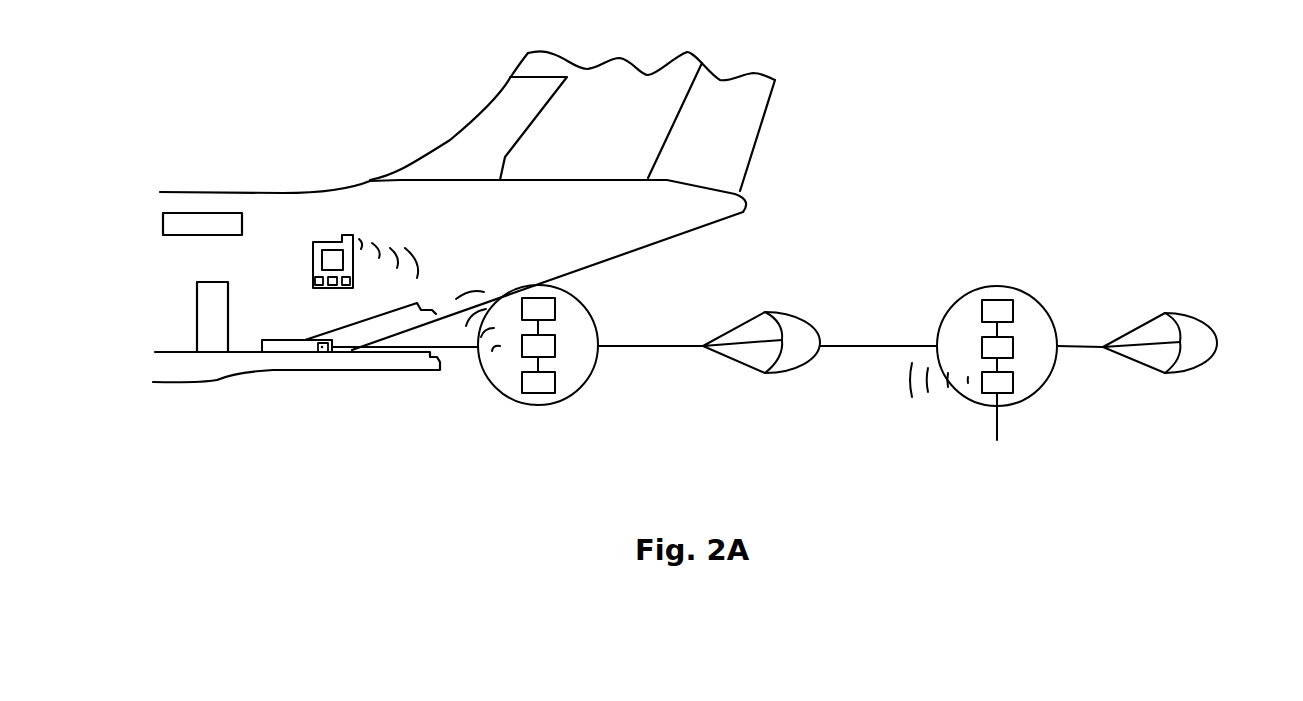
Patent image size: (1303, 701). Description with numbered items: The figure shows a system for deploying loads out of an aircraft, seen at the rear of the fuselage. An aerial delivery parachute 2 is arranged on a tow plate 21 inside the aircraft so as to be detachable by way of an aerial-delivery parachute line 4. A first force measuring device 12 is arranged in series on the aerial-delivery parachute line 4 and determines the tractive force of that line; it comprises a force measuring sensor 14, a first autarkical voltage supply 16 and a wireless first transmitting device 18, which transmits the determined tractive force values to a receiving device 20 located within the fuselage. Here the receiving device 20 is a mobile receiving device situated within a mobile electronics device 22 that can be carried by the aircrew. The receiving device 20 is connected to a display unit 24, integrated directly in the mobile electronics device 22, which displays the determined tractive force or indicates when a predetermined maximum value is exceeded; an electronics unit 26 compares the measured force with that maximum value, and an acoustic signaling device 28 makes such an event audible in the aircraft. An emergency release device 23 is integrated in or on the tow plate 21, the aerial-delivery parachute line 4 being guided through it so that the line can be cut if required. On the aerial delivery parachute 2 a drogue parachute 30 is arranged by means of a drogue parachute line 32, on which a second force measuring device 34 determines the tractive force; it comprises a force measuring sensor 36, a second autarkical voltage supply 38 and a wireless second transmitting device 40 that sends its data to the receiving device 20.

The aerial delivery parachute 2 is at (793, 330).
The aerial-delivery parachute line 4 is at (672, 346).
The first force measuring device 12 is at (535, 379).
The force measuring sensor 14 is at (543, 308).
The first autarkical voltage supply 16 is at (525, 345).
The wireless first transmitting device 18 is at (533, 395).
The receiving device 20 is at (332, 284).
The tow plate 21 is at (268, 348).
The mobile electronics device 22 is at (334, 226).
The emergency release device 23 is at (321, 353).
The display unit 24 is at (329, 252).
The electronics unit 26 is at (347, 285).
The acoustic signaling device 28 is at (318, 281).
The drogue parachute 30 is at (1190, 328).
The drogue parachute line 32 is at (997, 354).
The second force measuring device 34 is at (996, 432).
The force measuring sensor 36 is at (1007, 312).
The second autarkical voltage supply 38 is at (1007, 347).
The wireless second transmitting device 40 is at (1007, 383).